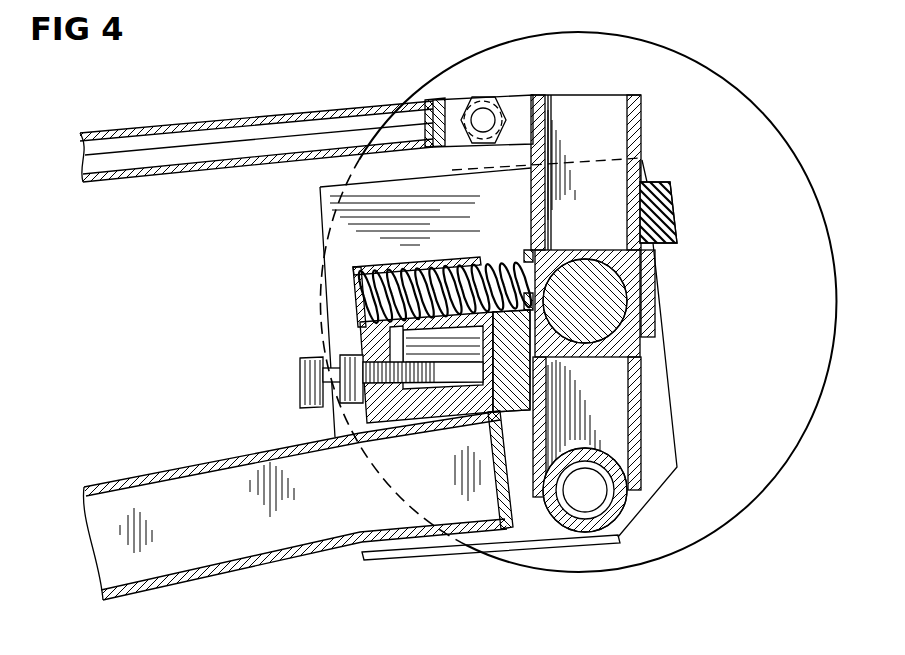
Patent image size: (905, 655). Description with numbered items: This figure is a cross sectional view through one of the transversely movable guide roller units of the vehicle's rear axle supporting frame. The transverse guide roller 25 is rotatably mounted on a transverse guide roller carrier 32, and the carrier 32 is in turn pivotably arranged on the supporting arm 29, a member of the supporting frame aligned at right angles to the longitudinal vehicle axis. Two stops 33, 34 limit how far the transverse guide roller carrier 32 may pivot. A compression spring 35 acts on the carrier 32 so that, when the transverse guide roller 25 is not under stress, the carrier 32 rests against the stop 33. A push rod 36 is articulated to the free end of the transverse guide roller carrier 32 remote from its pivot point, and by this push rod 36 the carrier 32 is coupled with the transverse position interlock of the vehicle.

The transverse guide roller 25 is at (769, 468).
The supporting arm 29 is at (245, 572).
The transverse guide roller carrier 32 is at (641, 150).
The stop 33 is at (670, 212).
The stop 34 is at (513, 418).
The compression spring 35 is at (423, 273).
The push rod 36 is at (205, 124).